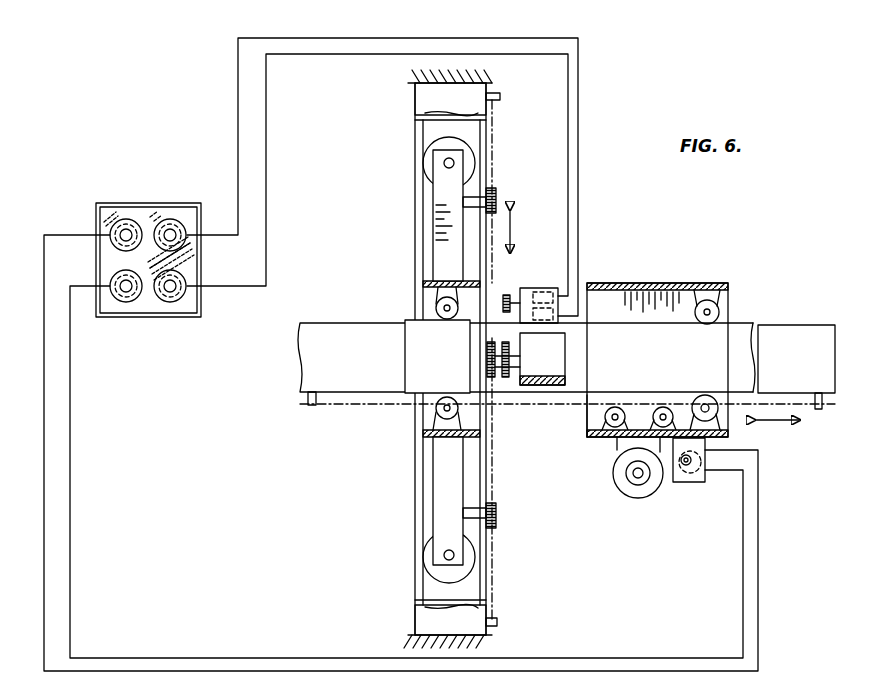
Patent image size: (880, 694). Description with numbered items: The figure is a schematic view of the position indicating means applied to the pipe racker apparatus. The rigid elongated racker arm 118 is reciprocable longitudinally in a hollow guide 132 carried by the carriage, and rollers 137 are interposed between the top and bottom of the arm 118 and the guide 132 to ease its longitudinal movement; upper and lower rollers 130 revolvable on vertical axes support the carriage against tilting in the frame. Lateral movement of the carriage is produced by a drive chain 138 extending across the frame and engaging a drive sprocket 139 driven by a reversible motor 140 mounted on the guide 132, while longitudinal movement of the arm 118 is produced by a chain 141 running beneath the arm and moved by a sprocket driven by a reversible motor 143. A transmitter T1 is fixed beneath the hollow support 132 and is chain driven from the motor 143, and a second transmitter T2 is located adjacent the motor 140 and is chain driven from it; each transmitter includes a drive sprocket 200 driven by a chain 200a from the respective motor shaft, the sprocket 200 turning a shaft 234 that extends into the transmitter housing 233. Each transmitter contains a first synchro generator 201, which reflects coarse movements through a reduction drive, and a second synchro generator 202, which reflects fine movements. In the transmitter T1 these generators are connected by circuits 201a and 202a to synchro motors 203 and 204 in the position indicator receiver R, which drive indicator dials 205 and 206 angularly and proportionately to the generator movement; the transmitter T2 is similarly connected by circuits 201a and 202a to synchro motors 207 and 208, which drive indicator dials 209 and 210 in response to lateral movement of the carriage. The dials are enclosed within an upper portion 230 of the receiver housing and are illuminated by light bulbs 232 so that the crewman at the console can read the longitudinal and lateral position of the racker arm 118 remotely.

The position-indicating receiver R is at (93, 203).
The upper portion of housing 230 is at (150, 203).
The synchro motor 204 is at (122, 222).
The synchro motor 208 is at (175, 222).
The indicator dial 206 is at (110, 230).
The indicator dial 210 is at (188, 228).
The indicator dial 205 is at (112, 279).
The indicator dial 209 is at (183, 288).
The synchro motor 203 is at (120, 302).
The synchro motor 207 is at (172, 303).
The light bulbs 232 is at (186, 262).
The circuit 202a is at (580, 112).
The circuit 201a is at (568, 140).
The racker arm 118 is at (738, 333).
The drive chain 138 is at (490, 484).
The rollers 130 is at (436, 148).
The drive sprocket 200 is at (503, 307).
The chain 200a is at (491, 346).
The transmitter T2 is at (528, 287).
The housing 233 is at (545, 292).
The shaft 234 is at (518, 287).
The first synchro generator 201 is at (560, 288).
The transmitter T1 is at (686, 484).
The reversible motor 140 is at (565, 367).
The drive sprocket 139 is at (507, 379).
The second synchro generator 202 is at (566, 333).
The hollow guide 132 is at (657, 282).
The rollers 137 is at (726, 302).
The chain 141 is at (585, 424).
The reversible motor 143 is at (625, 485).